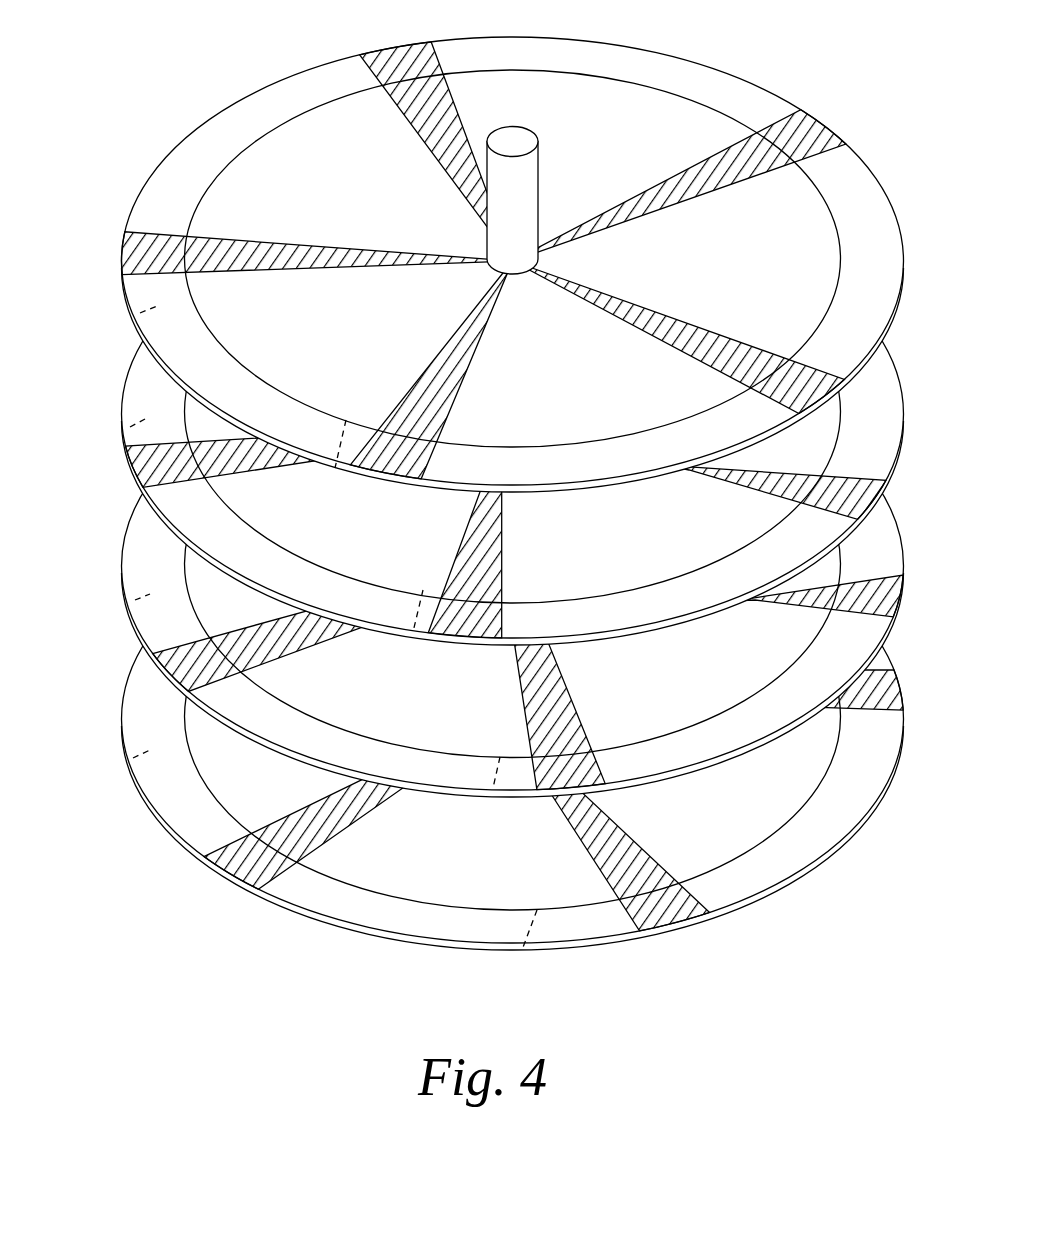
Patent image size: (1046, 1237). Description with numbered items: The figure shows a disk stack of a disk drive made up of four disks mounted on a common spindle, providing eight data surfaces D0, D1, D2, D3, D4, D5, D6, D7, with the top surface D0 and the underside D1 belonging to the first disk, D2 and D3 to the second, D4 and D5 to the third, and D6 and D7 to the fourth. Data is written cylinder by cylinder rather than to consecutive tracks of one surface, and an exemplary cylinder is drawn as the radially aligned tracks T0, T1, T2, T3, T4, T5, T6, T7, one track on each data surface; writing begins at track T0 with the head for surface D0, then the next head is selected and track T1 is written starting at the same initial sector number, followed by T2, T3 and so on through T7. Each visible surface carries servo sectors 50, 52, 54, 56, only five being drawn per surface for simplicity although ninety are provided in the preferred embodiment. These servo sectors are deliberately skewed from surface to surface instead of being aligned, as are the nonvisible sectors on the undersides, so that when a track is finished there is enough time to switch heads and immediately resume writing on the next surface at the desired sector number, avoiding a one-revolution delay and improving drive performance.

The servo sectors 50 is at (420, 107).
The servo sectors 52 is at (495, 585).
The servo sectors 54 is at (570, 720).
The servo sectors 56 is at (640, 865).
The data surface D0 is at (149, 208).
The data surface D1 is at (142, 317).
The data surface D2 is at (148, 402).
The data surface D3 is at (126, 428).
The data surface D4 is at (137, 542).
The data surface D5 is at (130, 603).
The data surface D6 is at (135, 703).
The data surface D7 is at (127, 762).
The track T0 is at (323, 412).
The track T1 is at (333, 462).
The track T2 is at (350, 578).
The track T3 is at (405, 640).
The track T4 is at (425, 753).
The track T5 is at (478, 798).
The track T6 is at (465, 908).
The track T7 is at (520, 948).